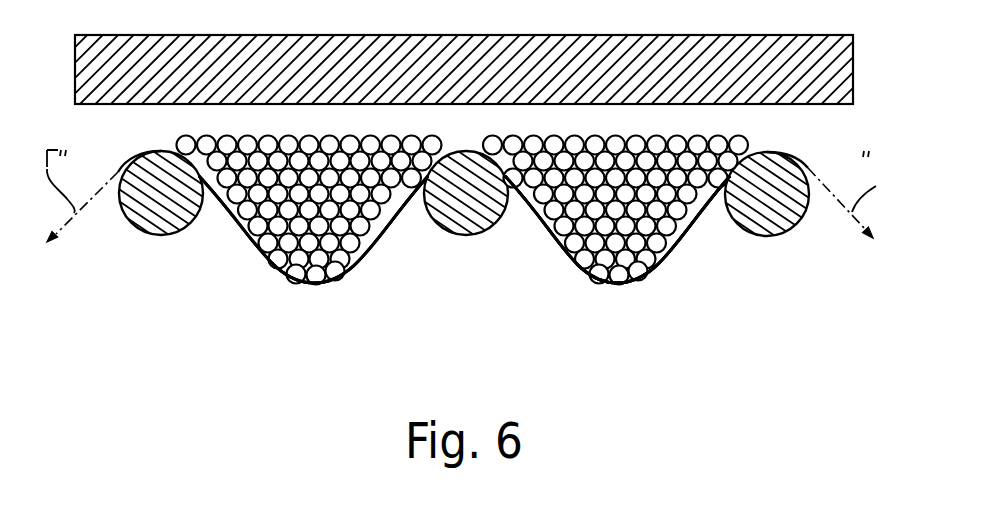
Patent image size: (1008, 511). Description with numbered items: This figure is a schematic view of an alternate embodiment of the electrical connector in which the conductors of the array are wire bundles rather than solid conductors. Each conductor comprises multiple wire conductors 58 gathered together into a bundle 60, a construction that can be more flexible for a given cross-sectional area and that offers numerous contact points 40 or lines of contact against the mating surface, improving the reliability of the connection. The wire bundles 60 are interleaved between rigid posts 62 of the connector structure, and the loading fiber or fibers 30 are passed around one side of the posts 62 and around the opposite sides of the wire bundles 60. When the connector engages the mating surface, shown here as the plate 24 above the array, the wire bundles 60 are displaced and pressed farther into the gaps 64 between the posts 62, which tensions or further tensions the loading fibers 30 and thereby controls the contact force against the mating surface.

The plate 24 is at (561, 107).
The loading fiber 30 is at (388, 233).
The contact points 40 is at (347, 137).
The wire conductors 58 is at (333, 281).
The bundle 60 is at (268, 292).
The rigid posts 62 is at (161, 237).
The gaps 64 is at (590, 339).